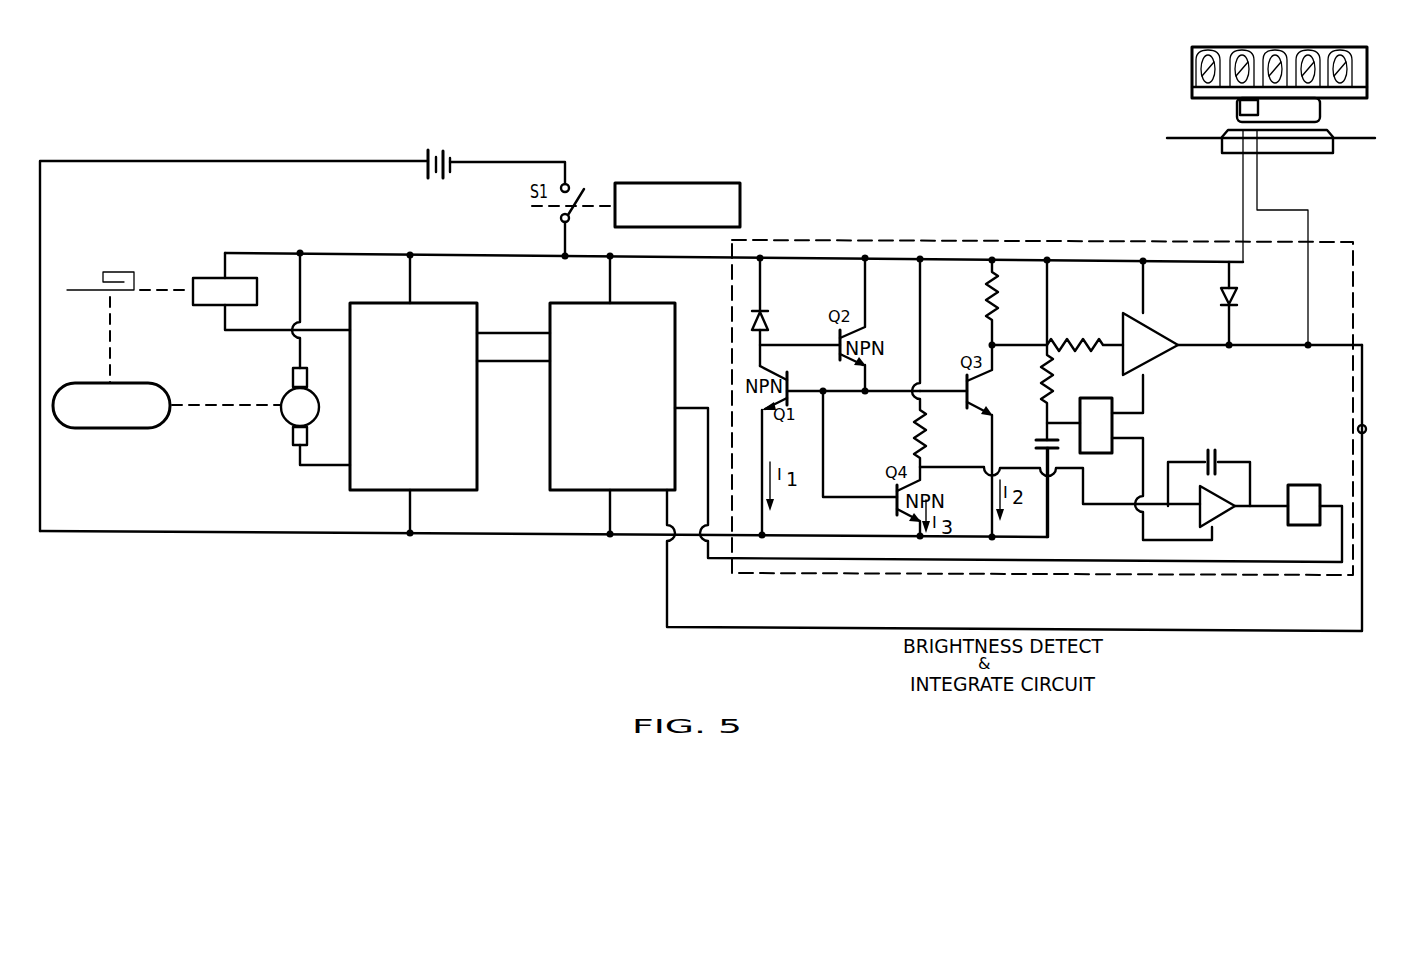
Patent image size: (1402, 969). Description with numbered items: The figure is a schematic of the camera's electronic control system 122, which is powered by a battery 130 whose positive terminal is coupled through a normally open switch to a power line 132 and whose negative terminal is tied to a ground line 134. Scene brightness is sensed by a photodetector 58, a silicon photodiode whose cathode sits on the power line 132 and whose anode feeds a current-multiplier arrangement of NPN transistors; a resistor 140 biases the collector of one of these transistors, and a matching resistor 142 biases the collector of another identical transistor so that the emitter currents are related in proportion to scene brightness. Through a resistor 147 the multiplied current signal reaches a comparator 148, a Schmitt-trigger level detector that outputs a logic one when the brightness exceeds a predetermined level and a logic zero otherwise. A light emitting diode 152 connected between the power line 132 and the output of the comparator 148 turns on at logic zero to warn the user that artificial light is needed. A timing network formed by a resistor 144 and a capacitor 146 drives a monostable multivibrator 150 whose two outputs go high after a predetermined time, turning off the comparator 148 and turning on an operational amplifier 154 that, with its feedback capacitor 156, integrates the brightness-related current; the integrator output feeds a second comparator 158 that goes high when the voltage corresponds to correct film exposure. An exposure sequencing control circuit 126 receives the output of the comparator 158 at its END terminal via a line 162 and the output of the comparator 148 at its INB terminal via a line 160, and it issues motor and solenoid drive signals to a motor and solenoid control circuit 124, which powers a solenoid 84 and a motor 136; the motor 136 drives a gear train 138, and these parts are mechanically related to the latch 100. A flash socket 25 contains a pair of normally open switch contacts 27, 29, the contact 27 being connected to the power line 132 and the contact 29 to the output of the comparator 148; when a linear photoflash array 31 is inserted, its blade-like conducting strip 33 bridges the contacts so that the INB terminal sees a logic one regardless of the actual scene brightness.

The battery 130 is at (440, 150).
The electronic control system 122 is at (748, 194).
The power line 132 is at (457, 254).
The latch 100 is at (112, 272).
The solenoid 84 is at (207, 278).
The gear train 138 is at (158, 400).
The motor 136 is at (282, 400).
The motor and solenoid control circuit 124 is at (477, 425).
The exposure sequencing control circuit 126 is at (676, 340).
The ground line 134 is at (508, 534).
The photodetector 58 is at (768, 312).
The resistor 140 is at (992, 290).
The resistor 142 is at (922, 435).
The resistor 144 is at (1045, 390).
The capacitor 146 is at (1045, 444).
The resistor 147 is at (1065, 344).
The comparator 148 is at (1242, 318).
The monostable multivibrator 150 is at (1086, 386).
The light emitting diode 152 is at (1238, 300).
The operational amplifier 154 is at (1222, 515).
The feedback capacitor 156 is at (1216, 460).
The comparator 158 is at (1308, 479).
The line 160 is at (1358, 430).
The line 162 is at (1228, 563).
The linear photoflash array 31 is at (1297, 47).
The conducting strip 33 is at (1240, 113).
The flash socket 25 is at (1330, 137).
The switch contact 27 is at (1236, 153).
The switch contact 29 is at (1262, 147).